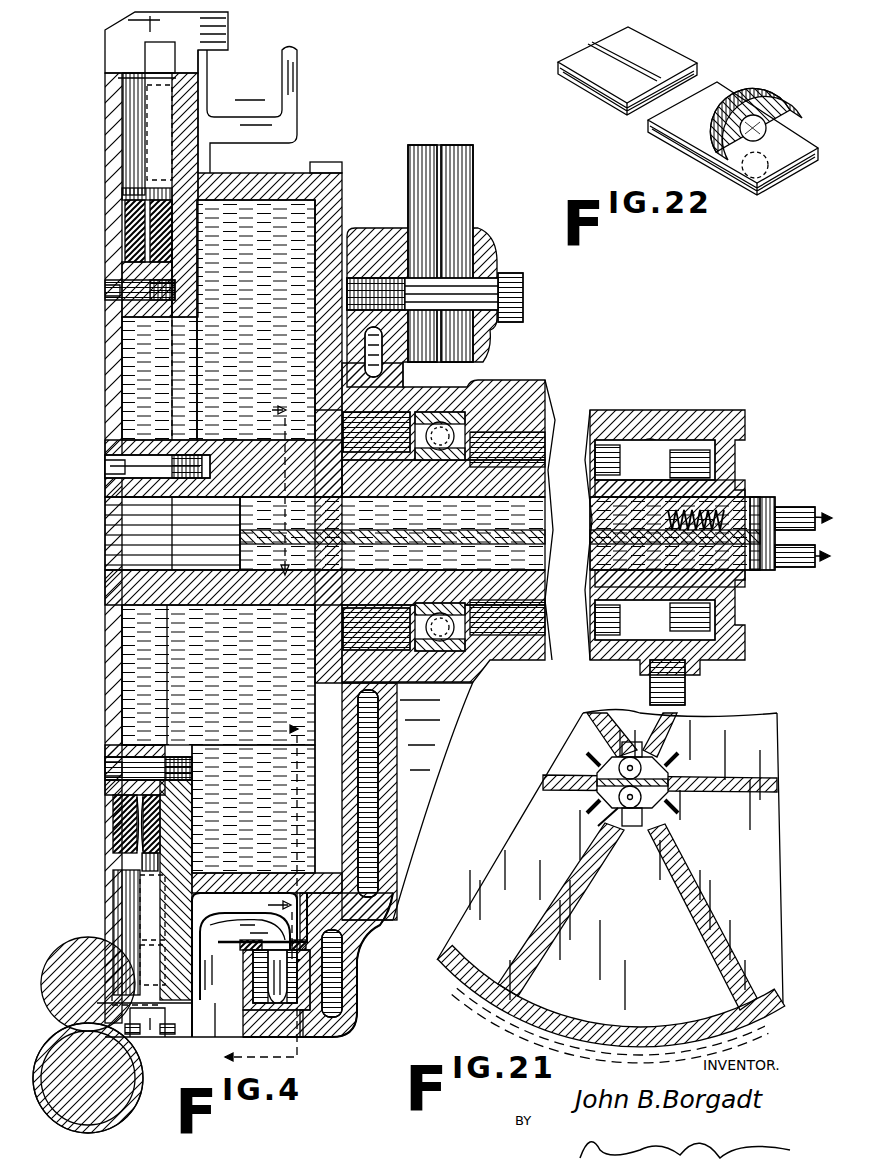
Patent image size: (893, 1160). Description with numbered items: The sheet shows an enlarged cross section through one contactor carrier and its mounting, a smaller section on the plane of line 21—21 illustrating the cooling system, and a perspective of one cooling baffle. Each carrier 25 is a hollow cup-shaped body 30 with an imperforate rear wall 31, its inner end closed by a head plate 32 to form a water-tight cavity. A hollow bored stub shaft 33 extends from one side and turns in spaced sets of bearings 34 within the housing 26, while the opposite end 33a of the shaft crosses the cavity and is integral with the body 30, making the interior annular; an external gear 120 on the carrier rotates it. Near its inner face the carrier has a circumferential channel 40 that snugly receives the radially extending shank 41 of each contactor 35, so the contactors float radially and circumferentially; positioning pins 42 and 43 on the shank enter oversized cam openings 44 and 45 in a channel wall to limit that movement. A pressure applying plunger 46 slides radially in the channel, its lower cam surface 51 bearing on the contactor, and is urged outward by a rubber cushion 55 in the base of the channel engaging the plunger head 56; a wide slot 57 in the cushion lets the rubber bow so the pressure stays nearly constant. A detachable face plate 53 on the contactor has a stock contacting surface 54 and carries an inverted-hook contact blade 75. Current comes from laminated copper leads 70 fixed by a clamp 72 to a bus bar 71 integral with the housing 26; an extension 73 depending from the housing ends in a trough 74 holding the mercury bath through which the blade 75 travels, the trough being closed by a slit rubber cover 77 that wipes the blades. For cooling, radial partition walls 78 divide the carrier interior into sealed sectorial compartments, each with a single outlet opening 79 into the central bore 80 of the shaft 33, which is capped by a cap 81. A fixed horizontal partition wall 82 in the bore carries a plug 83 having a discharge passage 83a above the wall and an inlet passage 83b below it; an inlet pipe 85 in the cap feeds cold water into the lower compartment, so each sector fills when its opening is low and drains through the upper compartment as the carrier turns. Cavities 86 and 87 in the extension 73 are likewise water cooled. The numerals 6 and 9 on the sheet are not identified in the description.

In FIG. 4, the section line 6- 6 is at (245, 890).
In FIG. 4, the tube 9 is at (138, 1095).
In FIG. 4, the section line 21- 21 is at (268, 678).
In FIG. 4, the carrier 25 is at (106, 418).
In FIG. 21, the carrier 25 is at (785, 962).
In FIG. 4, the housing 26 is at (597, 410).
In FIG. 4, the cup shape body 30 is at (270, 176).
In FIG. 4, the imperforate rear wall 31 is at (315, 326).
In FIG. 4, the head plate 32 is at (125, 362).
In FIG. 4, the stub shaft 33 is at (520, 640).
In FIG. 4, the opposite end of the shaft 33a is at (207, 440).
In FIG. 4, the bearings 34 is at (480, 410).
In FIG. 4, the contactor 35 is at (106, 50).
In FIG. 4, the circumferential channel 40 is at (150, 180).
In FIG. 4, the shank 41 is at (150, 126).
In FIG. 4, the positioning pin 42 is at (190, 166).
In FIG. 4, the positioning pin 43 is at (140, 953).
In FIG. 4, the cam opening 44 is at (215, 858).
In FIG. 4, the cam opening 45 is at (249, 542).
In FIG. 4, the pressure applying plunger 46 is at (120, 915).
In FIG. 4, the cam surface 51 is at (120, 78).
In FIG. 4, the face plate 53 is at (182, 1040).
In FIG. 4, the stock contacting surface 54 is at (118, 1038).
In FIG. 4, the rubber cushion 55 is at (124, 238).
In FIG. 4, the head of the plunger 56 is at (137, 848).
In FIG. 4, the slot 57 is at (128, 212).
In FIG. 4, the leads 70 is at (470, 200).
In FIG. 4, the bus bar 71 is at (380, 228).
In FIG. 4, the clamp 72 is at (496, 262).
In FIG. 4, the extension 73 is at (400, 772).
In FIG. 4, the trough 74 is at (300, 1030).
In FIG. 4, the contact blade 75 is at (276, 979).
In FIG. 4, the rubber cover 77 is at (262, 954).
In FIG. 21, the radial partition walls 78 is at (580, 880).
In FIG. 21, the outlet opening 79 is at (612, 760).
In FIG. 4, the central bore 80 is at (540, 512).
In FIG. 21, the central bore 80 is at (606, 818).
In FIG. 4, the cap 81 is at (768, 498).
In FIG. 4, the partition wall 82 is at (540, 540).
In FIG. 21, the partition wall 82 is at (668, 762).
In FIG. 22, the partition wall 82 is at (680, 137).
In FIG. 21, the plug 83 is at (606, 800).
In FIG. 22, the plug 83 is at (755, 100).
In FIG. 21, the discharge passage 83a is at (660, 810).
In FIG. 22, the discharge passage 83a is at (740, 178).
In FIG. 21, the inlet passage 83b is at (655, 762).
In FIG. 22, the inlet passage 83b is at (766, 128).
In FIG. 4, the inlet pipe 85 is at (805, 568).
In FIG. 4, the cavity 86 is at (803, 500).
In FIG. 4, the cavity 87 is at (340, 978).
In FIG. 4, the external gear 120 is at (328, 163).